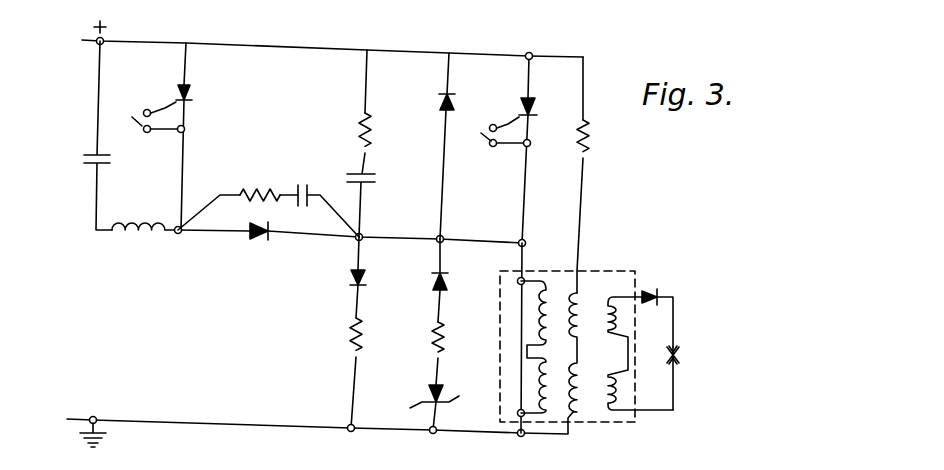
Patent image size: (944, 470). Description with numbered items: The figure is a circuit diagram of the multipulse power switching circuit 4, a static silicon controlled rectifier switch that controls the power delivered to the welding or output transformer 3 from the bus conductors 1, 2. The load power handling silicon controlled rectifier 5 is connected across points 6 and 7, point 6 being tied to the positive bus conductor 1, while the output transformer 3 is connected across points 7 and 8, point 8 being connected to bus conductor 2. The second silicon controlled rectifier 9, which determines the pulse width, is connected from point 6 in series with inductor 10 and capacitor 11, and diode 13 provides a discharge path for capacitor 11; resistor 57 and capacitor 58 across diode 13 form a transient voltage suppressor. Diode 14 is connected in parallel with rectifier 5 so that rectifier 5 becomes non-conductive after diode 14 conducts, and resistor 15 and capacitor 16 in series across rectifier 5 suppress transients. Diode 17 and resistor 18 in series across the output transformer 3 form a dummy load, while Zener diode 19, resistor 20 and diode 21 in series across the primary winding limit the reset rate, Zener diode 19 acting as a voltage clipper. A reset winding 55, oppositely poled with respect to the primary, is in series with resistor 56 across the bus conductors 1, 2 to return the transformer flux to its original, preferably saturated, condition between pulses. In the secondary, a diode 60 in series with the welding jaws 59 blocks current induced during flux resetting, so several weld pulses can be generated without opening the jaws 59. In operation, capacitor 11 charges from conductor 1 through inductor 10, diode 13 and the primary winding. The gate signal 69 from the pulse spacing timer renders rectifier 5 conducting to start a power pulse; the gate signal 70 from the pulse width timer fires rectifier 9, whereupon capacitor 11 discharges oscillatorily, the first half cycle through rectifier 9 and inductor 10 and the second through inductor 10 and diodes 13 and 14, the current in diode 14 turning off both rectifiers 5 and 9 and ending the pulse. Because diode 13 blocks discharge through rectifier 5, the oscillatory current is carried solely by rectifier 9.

The bus conductor 1 is at (96, 44).
The bus conductor 2 is at (91, 417).
The output transformer 3 is at (600, 271).
The switching circuit 4 is at (302, 44).
The silicon controlled rectifier 5 is at (522, 96).
The point 6 is at (532, 54).
The point 7 is at (527, 247).
The point 8 is at (518, 438).
The second silicon controlled rectifier 9 is at (190, 84).
The inductor 10 is at (141, 240).
The capacitor 11 is at (92, 152).
The diode 13 is at (258, 243).
The diode 14 is at (437, 97).
The resistor 15 is at (357, 124).
The capacitor 16 is at (375, 180).
The diode 17 is at (348, 278).
The resistor 18 is at (347, 340).
The Zener diode 19 is at (428, 397).
The resistor 20 is at (430, 340).
The diode 21 is at (434, 281).
The reset winding 55 is at (578, 349).
The resistor 56 is at (592, 138).
The resistor 57 is at (252, 188).
The capacitor 58 is at (299, 185).
The welding jaws 59 is at (680, 356).
The diode 60 is at (660, 293).
The output 69 is at (494, 132).
The output 70 is at (148, 117).